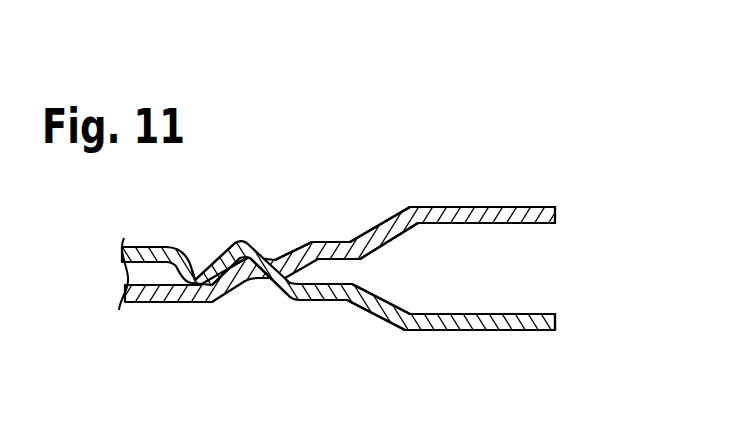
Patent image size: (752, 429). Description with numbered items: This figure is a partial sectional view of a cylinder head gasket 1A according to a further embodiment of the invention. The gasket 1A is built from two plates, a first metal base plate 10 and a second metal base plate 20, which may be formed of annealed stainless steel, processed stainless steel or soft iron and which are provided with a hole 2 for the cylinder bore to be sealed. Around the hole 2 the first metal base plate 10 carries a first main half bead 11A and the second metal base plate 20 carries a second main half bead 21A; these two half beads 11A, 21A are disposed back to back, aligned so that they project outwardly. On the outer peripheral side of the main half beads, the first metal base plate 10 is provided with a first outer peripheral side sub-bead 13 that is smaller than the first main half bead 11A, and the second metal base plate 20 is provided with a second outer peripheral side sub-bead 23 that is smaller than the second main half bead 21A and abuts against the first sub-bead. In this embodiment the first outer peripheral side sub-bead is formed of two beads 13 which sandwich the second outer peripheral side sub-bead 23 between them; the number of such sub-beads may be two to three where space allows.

The cylinder head gasket 1A is at (553, 183).
The first metal base plate 10 is at (556, 210).
The first main half bead 11A is at (443, 207).
The first outer peripheral side sub-bead 13 is at (193, 265).
The hole for cylinder bore 2 is at (652, 277).
The second metal base plate 20 is at (557, 316).
The second main half bead 21A is at (495, 332).
The second outer peripheral side sub-bead 23 is at (240, 279).